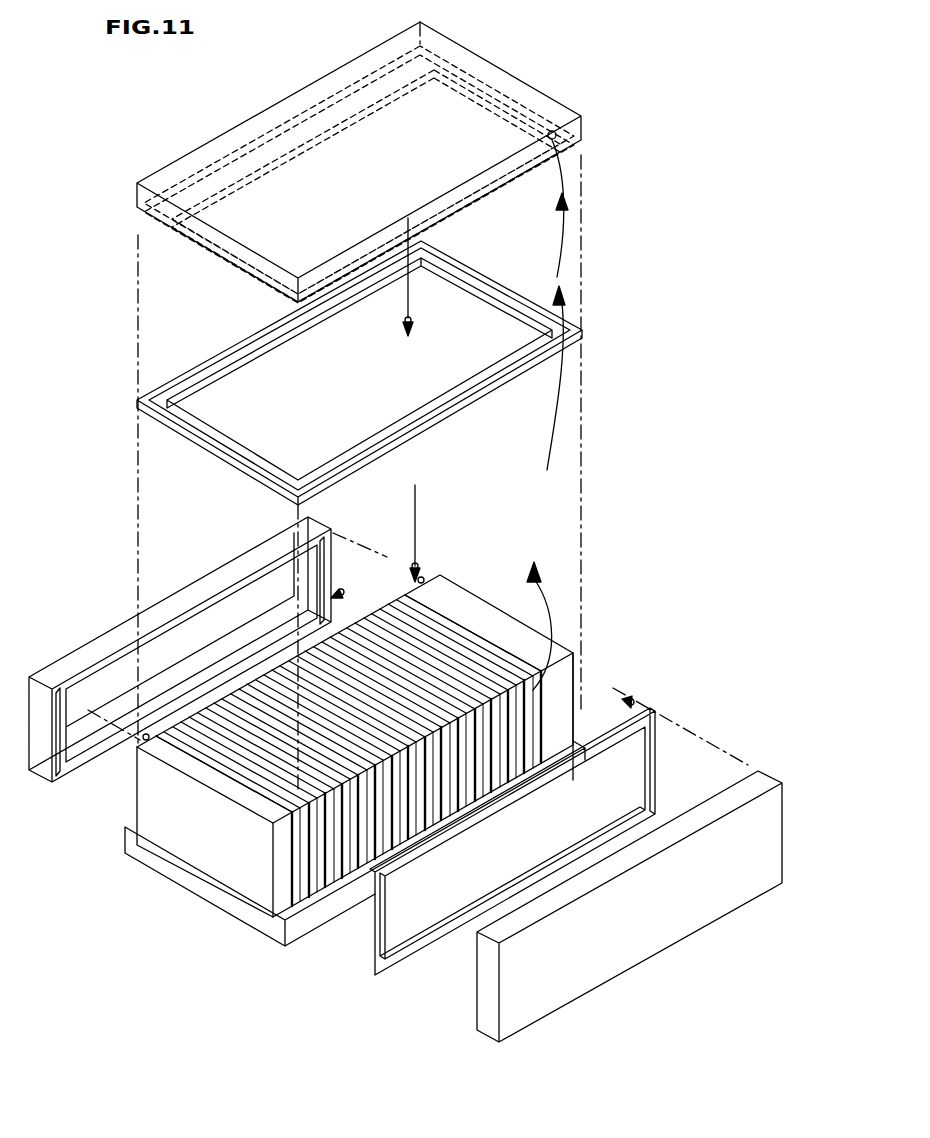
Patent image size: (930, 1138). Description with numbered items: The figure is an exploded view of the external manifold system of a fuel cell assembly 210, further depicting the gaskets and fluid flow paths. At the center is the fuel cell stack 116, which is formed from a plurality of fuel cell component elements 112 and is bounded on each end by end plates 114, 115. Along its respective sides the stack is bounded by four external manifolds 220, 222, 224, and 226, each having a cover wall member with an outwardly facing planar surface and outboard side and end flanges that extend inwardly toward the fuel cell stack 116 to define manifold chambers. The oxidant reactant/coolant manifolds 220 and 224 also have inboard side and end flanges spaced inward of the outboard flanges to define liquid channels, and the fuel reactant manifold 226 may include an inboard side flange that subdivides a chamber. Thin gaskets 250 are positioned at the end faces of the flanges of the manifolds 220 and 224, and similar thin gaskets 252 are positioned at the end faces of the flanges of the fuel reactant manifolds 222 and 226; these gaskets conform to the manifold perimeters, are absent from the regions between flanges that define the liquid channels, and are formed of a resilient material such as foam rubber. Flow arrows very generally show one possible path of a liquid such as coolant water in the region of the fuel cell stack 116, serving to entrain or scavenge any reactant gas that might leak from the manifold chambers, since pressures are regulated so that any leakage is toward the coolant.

The fuel cell assembly 210 is at (650, 138).
The reactant manifold 220 is at (455, 96).
The gasket 250 is at (228, 347).
The gasket 252 is at (343, 596).
The reactant manifold 226 is at (106, 630).
The fuel cell component elements 112 is at (391, 745).
The end plate 114 is at (222, 848).
The end plate 115 is at (455, 607).
The fuel cell stack 116 is at (409, 626).
The reactant manifold 224 is at (260, 931).
The reactant manifold 222 is at (712, 903).